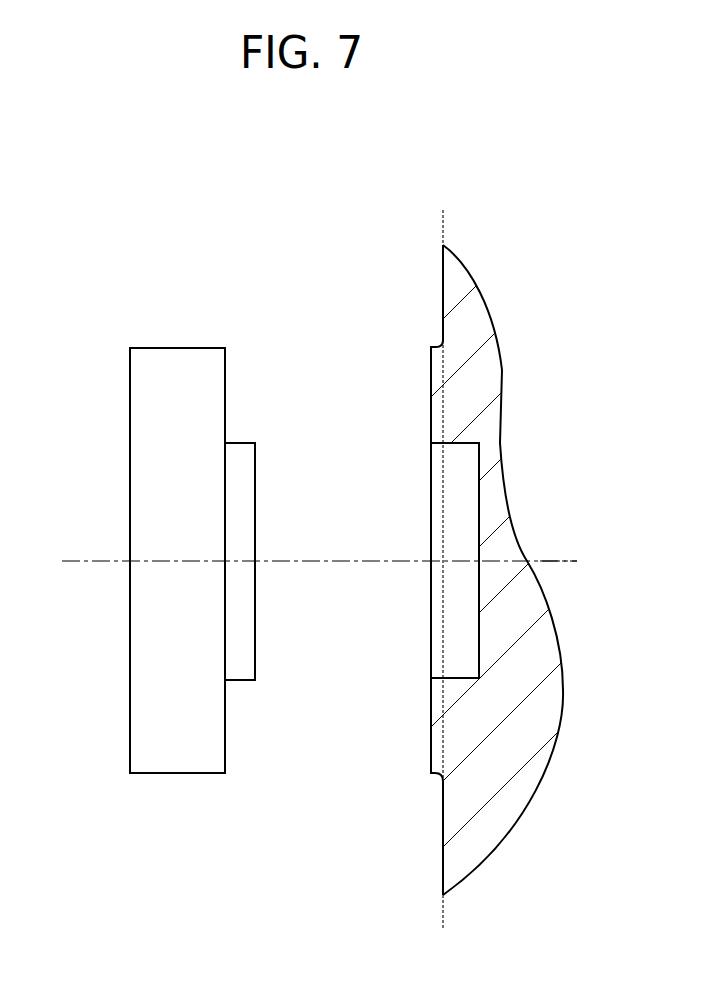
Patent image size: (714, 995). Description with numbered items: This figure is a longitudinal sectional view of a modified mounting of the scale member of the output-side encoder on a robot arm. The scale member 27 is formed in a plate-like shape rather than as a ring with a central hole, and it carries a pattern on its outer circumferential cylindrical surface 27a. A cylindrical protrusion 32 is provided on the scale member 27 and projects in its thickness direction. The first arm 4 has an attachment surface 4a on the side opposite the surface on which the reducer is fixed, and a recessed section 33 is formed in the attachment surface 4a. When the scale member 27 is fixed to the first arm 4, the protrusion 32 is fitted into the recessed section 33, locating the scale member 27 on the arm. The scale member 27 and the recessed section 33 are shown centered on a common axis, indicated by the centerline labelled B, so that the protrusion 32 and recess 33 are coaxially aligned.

The first arm 4 is at (460, 227).
The attachment surface 4a is at (431, 381).
The scale member 27 is at (157, 477).
The cylindrical surface 27a is at (172, 348).
The cylindrical protrusion 32 is at (255, 516).
The recessed section 33 is at (456, 678).
The axis line B is at (553, 558).